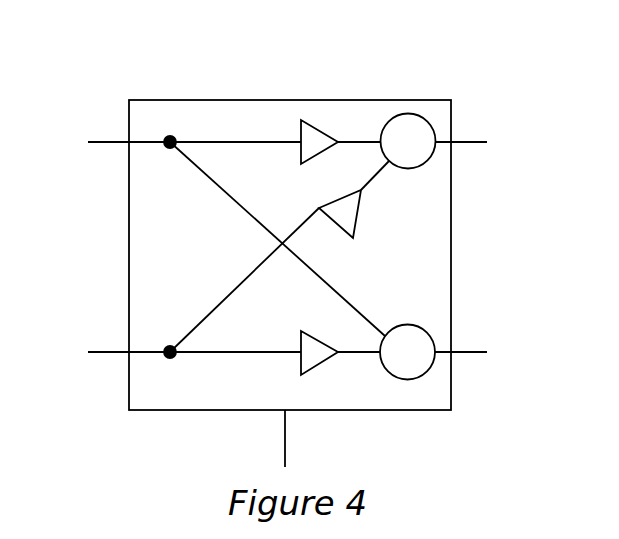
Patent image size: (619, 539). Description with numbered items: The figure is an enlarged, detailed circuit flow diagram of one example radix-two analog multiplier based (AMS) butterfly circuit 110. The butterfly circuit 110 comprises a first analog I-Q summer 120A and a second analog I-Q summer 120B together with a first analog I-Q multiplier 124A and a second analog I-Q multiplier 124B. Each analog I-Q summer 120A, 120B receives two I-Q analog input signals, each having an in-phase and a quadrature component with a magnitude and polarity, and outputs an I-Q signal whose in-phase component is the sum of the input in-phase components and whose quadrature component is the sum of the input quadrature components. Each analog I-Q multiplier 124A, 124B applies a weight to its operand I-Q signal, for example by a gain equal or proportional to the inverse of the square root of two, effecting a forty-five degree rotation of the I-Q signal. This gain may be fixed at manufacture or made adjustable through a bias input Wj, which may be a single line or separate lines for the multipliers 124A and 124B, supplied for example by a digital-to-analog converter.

The radix-2 AMS butterfly circuit 110 is at (484, 104).
The analog I-Q summer 120A is at (427, 159).
The analog I-Q summer 120B is at (429, 333).
The analog I-Q multiplier 124A is at (354, 238).
The analog I-Q multiplier 124B is at (330, 357).